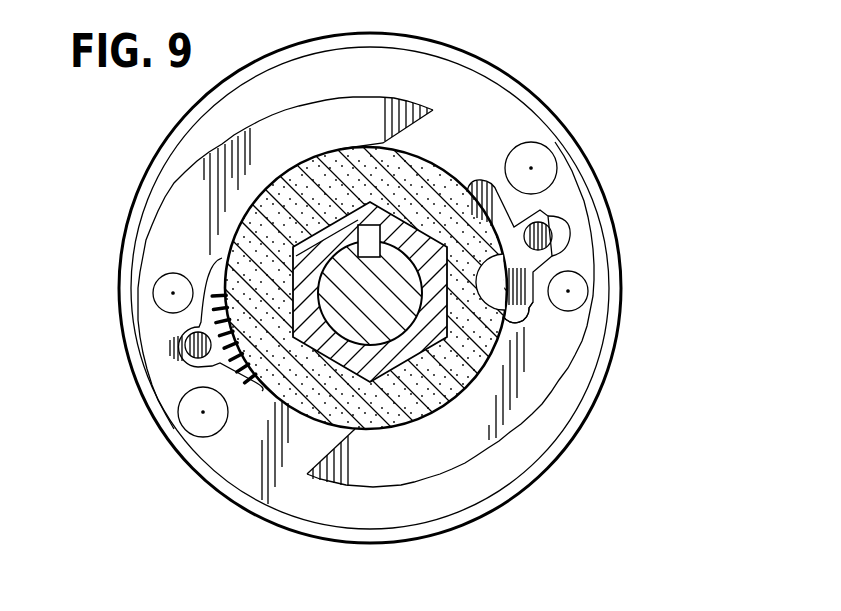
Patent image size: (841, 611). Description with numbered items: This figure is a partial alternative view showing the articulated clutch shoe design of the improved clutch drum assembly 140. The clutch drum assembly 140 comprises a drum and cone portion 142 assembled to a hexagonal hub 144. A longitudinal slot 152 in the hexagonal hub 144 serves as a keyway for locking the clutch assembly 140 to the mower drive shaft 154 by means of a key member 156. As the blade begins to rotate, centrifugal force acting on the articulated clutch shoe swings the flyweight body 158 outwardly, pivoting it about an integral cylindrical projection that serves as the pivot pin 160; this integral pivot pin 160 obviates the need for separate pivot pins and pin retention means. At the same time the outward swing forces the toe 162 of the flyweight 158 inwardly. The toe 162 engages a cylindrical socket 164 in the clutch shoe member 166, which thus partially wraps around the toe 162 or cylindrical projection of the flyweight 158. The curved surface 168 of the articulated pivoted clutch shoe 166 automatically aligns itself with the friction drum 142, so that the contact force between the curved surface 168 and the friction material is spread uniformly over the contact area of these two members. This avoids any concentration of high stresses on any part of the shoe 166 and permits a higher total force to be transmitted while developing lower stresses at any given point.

The clutch drum assembly 140 is at (592, 134).
The drum and cone portion 142 is at (412, 158).
The hexagonal hub 144 is at (455, 190).
The longitudinal slot 152 is at (378, 228).
The mower drive shaft 154 is at (353, 318).
The key member 156 is at (366, 246).
The flyweight body 158 is at (545, 370).
The pivot pin 160 is at (572, 283).
The toe 162 is at (553, 234).
The cylindrical socket 164 is at (540, 239).
The clutch shoe member 166 is at (525, 195).
The curved surface 168 is at (508, 318).